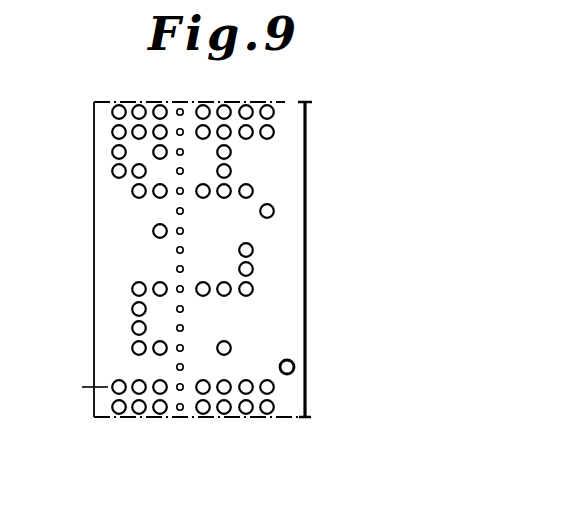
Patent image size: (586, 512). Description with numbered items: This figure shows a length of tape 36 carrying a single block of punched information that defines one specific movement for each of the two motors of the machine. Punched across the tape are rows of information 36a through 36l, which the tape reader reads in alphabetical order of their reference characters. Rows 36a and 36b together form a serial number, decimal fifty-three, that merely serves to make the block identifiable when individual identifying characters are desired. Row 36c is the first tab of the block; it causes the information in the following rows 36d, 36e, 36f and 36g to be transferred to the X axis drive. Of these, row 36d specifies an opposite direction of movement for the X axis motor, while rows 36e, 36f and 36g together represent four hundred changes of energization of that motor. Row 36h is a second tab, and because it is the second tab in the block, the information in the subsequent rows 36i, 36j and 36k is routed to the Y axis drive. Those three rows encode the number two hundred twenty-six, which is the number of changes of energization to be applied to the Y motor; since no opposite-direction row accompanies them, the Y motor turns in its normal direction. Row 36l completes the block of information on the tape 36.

The length of tape 36 is at (105, 414).
The row of information 36a is at (108, 152).
The row of information 36b is at (108, 171).
The row of information (first tab) 36c is at (108, 191).
The row of information 36d is at (108, 211).
The row of information 36e is at (108, 231).
The row of information 36f is at (108, 250).
The row of information 36g is at (108, 269).
The row of information (second tab) 36h is at (108, 289).
The row of information 36i is at (108, 309).
The row of information 36j is at (108, 328).
The row of information 36k is at (108, 348).
The row of information 36l is at (108, 367).